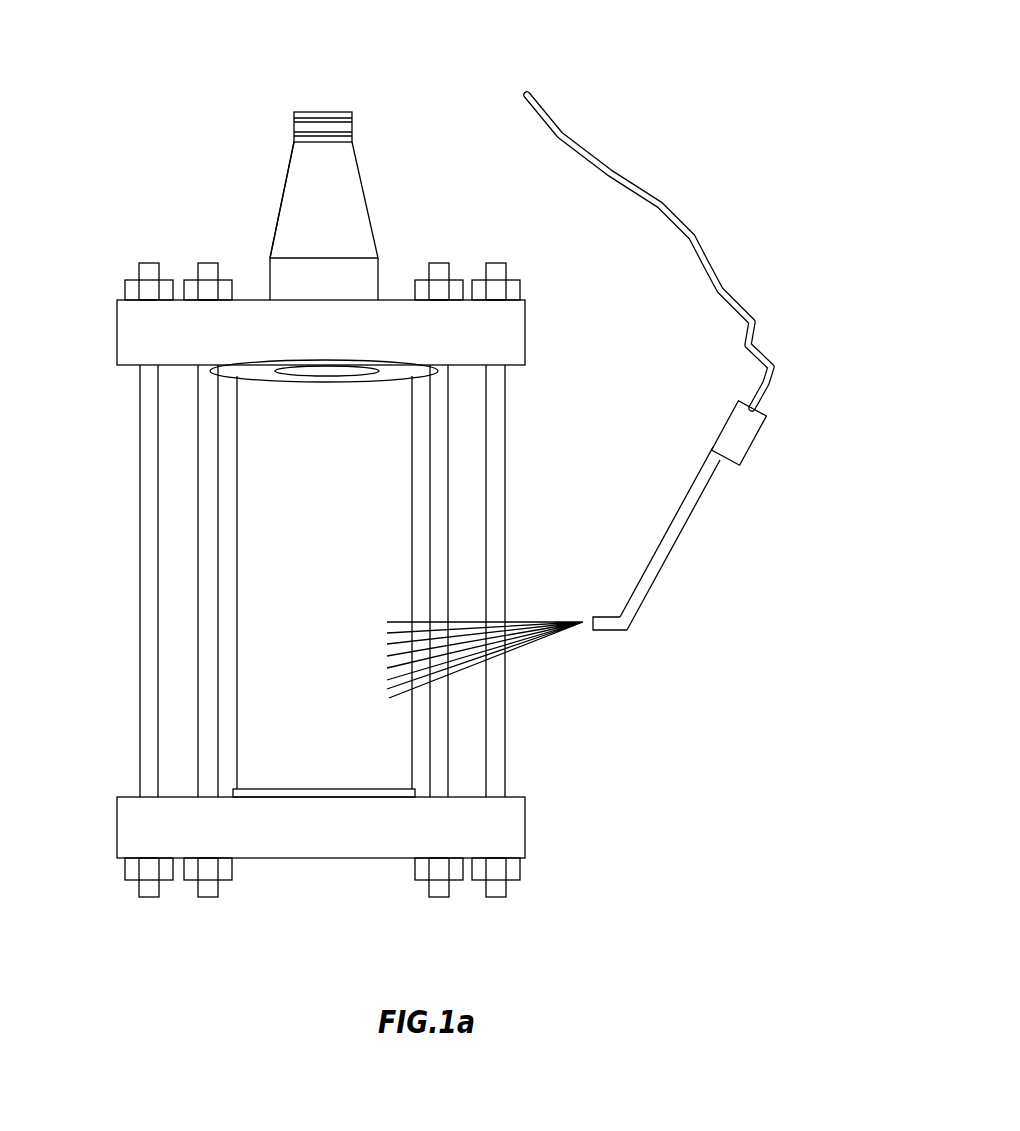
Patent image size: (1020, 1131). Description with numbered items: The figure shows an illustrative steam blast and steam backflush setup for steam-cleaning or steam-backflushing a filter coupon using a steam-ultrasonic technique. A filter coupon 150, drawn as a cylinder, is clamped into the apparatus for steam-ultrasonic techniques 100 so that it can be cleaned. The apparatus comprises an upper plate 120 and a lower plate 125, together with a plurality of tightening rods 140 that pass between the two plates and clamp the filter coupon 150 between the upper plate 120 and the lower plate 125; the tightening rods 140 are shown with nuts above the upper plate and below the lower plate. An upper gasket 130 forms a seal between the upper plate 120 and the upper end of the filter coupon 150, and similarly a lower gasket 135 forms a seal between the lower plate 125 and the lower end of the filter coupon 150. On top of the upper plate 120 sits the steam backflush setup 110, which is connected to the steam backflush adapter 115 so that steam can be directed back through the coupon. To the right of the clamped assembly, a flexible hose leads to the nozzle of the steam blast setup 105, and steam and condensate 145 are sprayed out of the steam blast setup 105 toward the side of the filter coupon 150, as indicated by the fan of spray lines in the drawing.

The apparatus for steam-ultrasonic techniques 100 is at (712, 75).
The steam blast setup 105 is at (527, 87).
The steam backflush setup 110 is at (313, 110).
The steam backflush adapter 115 is at (287, 166).
The upper plate 120 is at (255, 298).
The lower plate 125 is at (377, 860).
The upper gasket 130 is at (212, 378).
The lower gasket 135 is at (233, 790).
The tightening rods 140 is at (200, 258).
The steam and condensate 145 is at (470, 653).
The filter coupon 150 is at (237, 548).